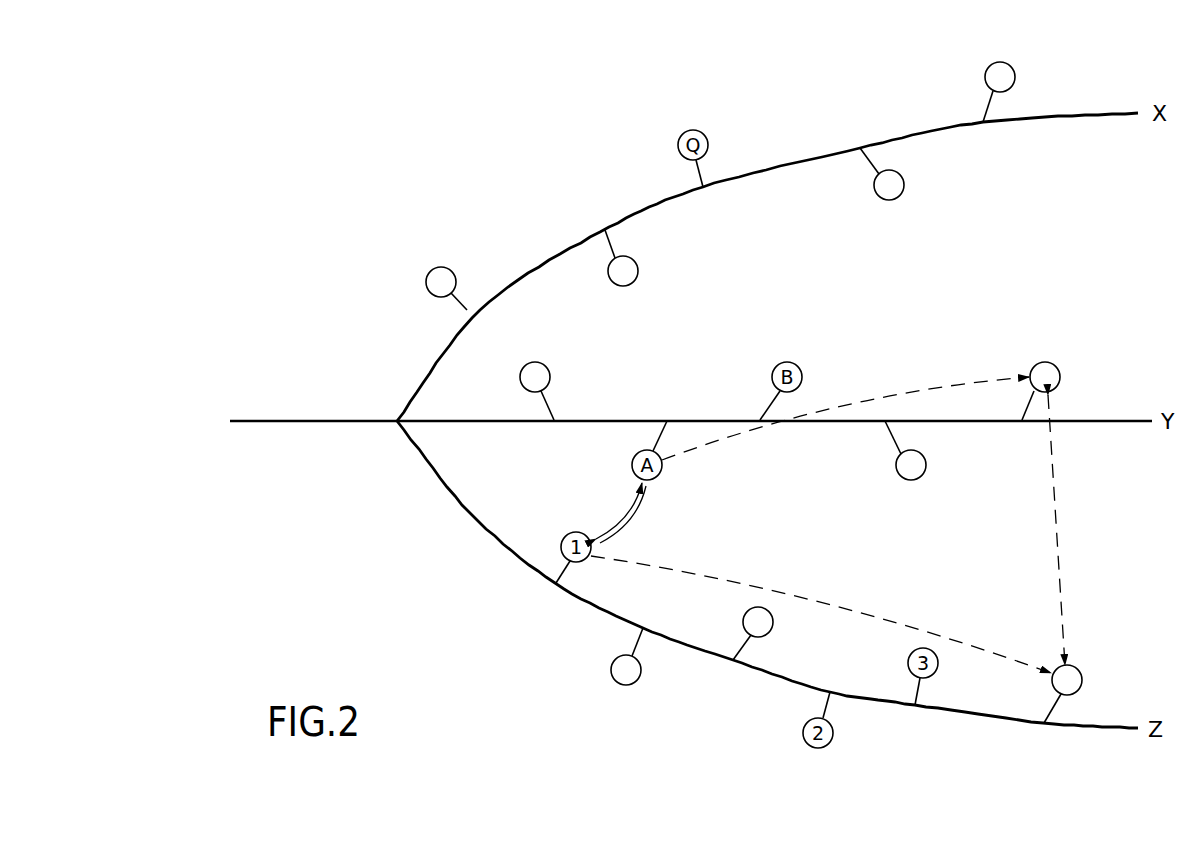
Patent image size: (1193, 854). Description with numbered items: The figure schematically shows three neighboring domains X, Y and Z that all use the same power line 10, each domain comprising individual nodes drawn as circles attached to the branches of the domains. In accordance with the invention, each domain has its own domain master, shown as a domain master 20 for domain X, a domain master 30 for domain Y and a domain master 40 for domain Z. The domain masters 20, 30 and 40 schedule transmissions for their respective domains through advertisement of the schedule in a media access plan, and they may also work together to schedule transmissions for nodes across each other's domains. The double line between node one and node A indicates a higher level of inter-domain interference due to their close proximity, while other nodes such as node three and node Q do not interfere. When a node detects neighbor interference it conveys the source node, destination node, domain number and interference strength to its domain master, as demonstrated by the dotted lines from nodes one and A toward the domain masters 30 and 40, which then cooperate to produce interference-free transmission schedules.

The power line 10 is at (300, 420).
The domain master 20 is at (1012, 66).
The domain master 30 is at (1056, 366).
The domain master 40 is at (1080, 671).